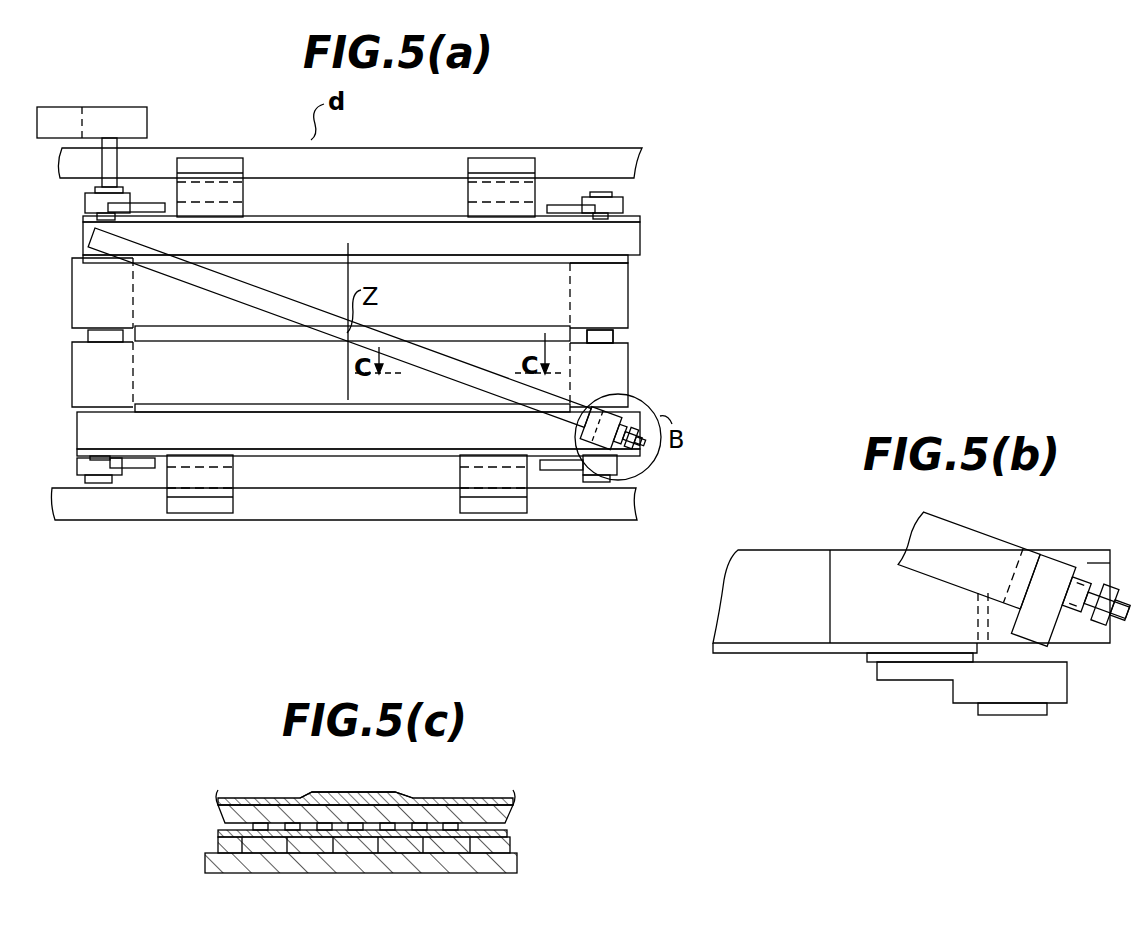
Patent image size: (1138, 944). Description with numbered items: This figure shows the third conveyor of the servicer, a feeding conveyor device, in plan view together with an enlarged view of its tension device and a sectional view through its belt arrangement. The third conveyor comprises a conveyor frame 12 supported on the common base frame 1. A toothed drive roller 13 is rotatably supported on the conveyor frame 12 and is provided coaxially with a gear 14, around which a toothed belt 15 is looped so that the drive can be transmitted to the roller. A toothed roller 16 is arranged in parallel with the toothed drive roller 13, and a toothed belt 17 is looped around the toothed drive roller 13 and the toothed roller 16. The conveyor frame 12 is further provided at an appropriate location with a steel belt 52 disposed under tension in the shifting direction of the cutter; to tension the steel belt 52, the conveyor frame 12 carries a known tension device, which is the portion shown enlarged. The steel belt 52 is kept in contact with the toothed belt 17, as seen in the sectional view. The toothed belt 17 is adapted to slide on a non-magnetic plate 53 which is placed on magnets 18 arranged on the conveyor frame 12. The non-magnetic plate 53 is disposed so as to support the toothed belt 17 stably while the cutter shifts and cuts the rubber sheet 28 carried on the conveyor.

In FIG. 5A, the common base frame 1 is at (437, 148).
In FIG. 5A, the conveyor frame 12 is at (343, 216).
In FIG. 5B, the conveyor frame 12 is at (770, 657).
In FIG. 5C, the conveyor frame 12 is at (515, 860).
In FIG. 5A, the toothed drive roller 13 is at (146, 364).
In FIG. 5A, the gear 14 is at (147, 105).
In FIG. 5A, the toothed belt 15 is at (62, 106).
In FIG. 5A, the toothed roller 16 is at (563, 351).
In FIG. 5A, the toothed belt 17 is at (640, 342).
In FIG. 5C, the toothed belt 17 is at (516, 812).
In FIG. 5C, the magnets 18 is at (522, 835).
In FIG. 5C, the rubber sheet 28 is at (473, 797).
In FIG. 5A, the steel belt 52 is at (283, 293).
In FIG. 5B, the steel belt 52 is at (975, 504).
In FIG. 5C, the steel belt 52 is at (385, 768).
In FIG. 5C, the non-magnetic plate 53 is at (220, 828).